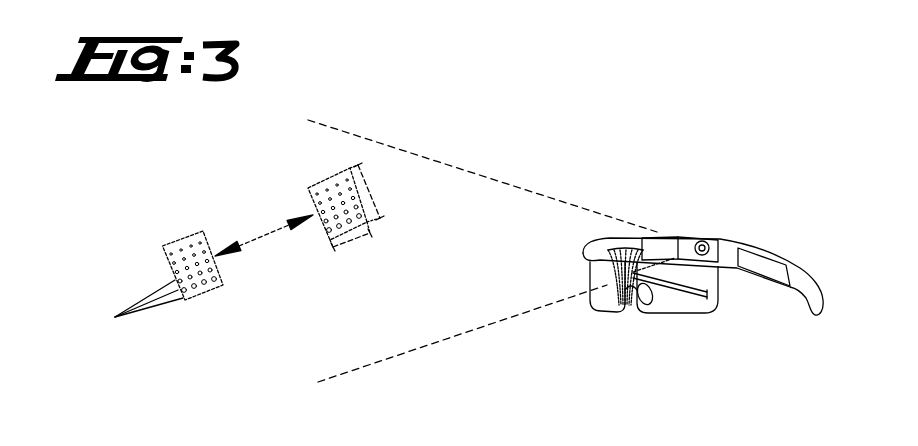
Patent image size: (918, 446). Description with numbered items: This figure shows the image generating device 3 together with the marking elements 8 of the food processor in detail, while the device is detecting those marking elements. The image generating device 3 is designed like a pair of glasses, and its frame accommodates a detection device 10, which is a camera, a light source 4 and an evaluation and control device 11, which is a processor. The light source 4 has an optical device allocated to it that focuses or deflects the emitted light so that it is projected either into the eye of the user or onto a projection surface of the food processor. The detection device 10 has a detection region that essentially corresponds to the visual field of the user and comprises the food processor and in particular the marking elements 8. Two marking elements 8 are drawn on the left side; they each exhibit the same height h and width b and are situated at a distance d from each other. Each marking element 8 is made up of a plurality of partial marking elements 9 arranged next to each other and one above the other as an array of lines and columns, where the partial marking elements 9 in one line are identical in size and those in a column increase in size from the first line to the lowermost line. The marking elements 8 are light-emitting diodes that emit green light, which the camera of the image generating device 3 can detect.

The image generating device 3 is at (752, 335).
The light source 4 is at (655, 247).
The marking element 8 is at (207, 243).
The partial marking element 9 is at (139, 308).
The detection device 10 is at (698, 240).
The evaluation and control device 11 is at (765, 267).
The distance d is at (264, 241).
The height h is at (372, 192).
The width b is at (353, 249).